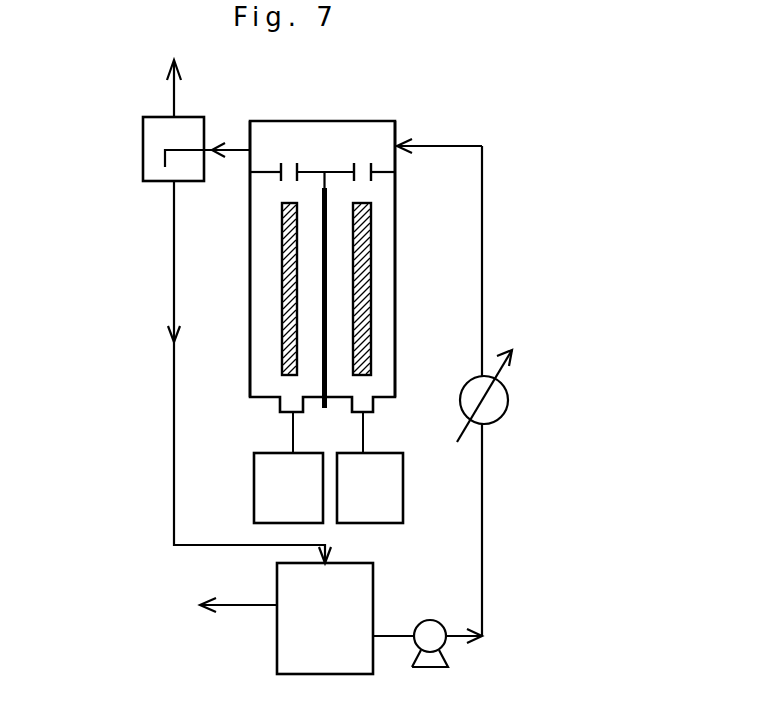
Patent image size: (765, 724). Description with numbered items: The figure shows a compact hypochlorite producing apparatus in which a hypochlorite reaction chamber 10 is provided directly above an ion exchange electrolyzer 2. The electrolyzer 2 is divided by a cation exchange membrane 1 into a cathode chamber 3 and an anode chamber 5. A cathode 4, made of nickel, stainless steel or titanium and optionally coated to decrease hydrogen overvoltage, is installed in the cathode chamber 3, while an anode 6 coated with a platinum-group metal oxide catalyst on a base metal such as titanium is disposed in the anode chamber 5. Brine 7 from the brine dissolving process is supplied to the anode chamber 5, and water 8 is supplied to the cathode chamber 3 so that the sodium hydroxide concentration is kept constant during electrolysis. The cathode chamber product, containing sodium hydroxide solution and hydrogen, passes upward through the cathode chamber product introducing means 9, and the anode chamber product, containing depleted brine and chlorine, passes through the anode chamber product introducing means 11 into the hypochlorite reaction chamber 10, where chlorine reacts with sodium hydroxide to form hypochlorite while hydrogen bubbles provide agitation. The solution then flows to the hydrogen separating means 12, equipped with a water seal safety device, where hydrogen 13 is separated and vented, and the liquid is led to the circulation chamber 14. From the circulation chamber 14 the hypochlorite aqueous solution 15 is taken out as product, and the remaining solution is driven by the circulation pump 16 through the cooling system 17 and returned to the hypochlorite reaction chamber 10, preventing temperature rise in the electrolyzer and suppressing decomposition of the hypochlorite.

The cation exchange membrane 1 is at (314, 366).
The ion exchange electrolyzer 2 is at (233, 216).
The cathode chamber 3 is at (267, 228).
The cathode 4 is at (283, 317).
The anode chamber 5 is at (383, 267).
The anode 6 is at (370, 365).
The brine 7 is at (370, 488).
The water 8 is at (288, 488).
The cathode chamber product introducing means 9 is at (290, 160).
The hypochlorite reaction chamber 10 is at (325, 147).
The anode chamber product introducing means 11 is at (360, 160).
The hydrogen separating means 12 is at (160, 138).
The hydrogen 13 is at (185, 97).
The circulation chamber 14 is at (270, 427).
The hypochlorite aqueous solution 15 is at (218, 606).
The circulation pump 16 is at (430, 662).
The cooling system 17 is at (497, 400).